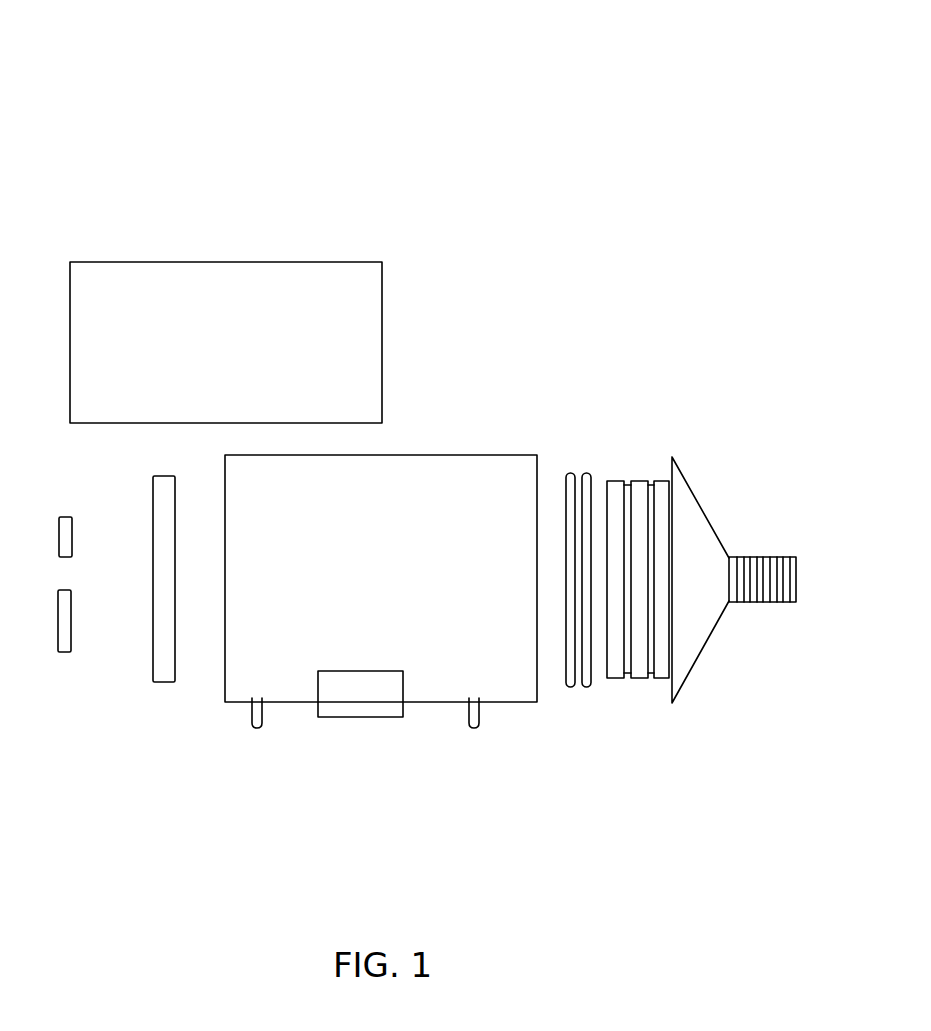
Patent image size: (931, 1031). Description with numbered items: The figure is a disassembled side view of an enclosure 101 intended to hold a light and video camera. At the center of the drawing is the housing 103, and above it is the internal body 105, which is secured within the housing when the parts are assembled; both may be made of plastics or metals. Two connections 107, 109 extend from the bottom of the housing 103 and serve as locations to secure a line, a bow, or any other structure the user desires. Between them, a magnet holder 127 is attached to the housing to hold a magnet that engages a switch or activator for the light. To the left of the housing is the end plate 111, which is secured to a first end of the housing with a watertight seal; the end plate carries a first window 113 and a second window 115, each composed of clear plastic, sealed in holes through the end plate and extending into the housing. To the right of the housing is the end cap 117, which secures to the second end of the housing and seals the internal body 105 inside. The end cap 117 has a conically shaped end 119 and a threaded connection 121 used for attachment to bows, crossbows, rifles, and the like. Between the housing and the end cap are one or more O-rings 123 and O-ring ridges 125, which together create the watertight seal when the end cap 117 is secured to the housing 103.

The enclosure 101 is at (118, 61).
The housing 103 is at (443, 455).
The internal body 105 is at (224, 262).
The connection 107 is at (255, 728).
The connection 109 is at (473, 728).
The end plate 111 is at (163, 682).
The first window 113 is at (63, 517).
The second window 115 is at (63, 652).
The end cap 117 is at (747, 418).
The conically shaped end 119 is at (697, 507).
The threaded connection 121 is at (767, 557).
The O-rings 123 is at (570, 473).
The O-ring ridges 125 is at (628, 678).
The magnet holder 127 is at (358, 717).